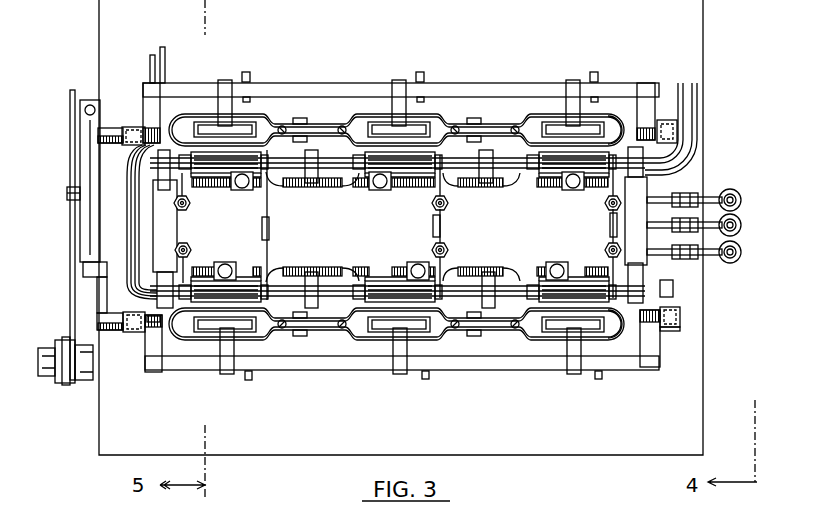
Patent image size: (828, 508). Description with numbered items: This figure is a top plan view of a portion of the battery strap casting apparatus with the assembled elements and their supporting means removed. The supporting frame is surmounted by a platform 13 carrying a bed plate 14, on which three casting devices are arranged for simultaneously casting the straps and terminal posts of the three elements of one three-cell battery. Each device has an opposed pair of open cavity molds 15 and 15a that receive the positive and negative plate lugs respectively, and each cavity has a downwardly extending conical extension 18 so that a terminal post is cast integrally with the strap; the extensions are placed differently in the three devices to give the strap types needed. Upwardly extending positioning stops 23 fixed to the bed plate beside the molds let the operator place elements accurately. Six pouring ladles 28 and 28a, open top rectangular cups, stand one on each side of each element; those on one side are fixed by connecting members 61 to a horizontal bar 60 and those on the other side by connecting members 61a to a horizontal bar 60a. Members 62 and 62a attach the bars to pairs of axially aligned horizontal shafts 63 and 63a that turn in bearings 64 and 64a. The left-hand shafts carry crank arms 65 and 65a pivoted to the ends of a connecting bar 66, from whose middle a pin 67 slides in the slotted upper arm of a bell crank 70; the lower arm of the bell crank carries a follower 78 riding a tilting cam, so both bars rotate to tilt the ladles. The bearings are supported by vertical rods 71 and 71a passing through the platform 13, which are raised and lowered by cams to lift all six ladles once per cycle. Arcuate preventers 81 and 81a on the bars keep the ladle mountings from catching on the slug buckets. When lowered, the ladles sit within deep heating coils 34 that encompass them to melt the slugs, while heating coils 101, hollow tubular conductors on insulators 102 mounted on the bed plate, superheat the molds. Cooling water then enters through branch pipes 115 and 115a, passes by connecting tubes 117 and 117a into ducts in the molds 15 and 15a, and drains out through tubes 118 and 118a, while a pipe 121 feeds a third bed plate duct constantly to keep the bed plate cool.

The platform 13 is at (703, 428).
The bed plate 14 is at (630, 210).
The open cavity mold 15 is at (553, 170).
The open cavity mold 15a is at (574, 287).
The conical extension 18 is at (232, 266).
The positioning stop 23 is at (610, 221).
The pouring ladle 28 is at (548, 128).
The pouring ladle 28a is at (562, 330).
The heating coil 34 is at (622, 330).
The horizontal bar 60 is at (333, 88).
The horizontal bar 60a is at (355, 372).
The connecting member 61 is at (574, 82).
The connecting member 61a is at (578, 375).
The attaching member 62 is at (655, 100).
The attaching member 62a is at (658, 350).
The horizontal shaft 63 is at (110, 143).
The horizontal shaft 63a is at (127, 314).
The bearing 64 is at (668, 120).
The bearing 64a is at (681, 318).
The crank arm 65 is at (88, 102).
The crank arm 65a is at (100, 294).
The connecting bar 66 is at (92, 232).
The pin 67 is at (67, 193).
The bell crank 70 is at (70, 158).
The vertical rod 71 is at (697, 130).
The vertical rod 71a is at (673, 328).
The roller or follower 78 is at (63, 386).
The arcuate preventer 81 is at (600, 75).
The arcuate preventer 81a is at (602, 379).
The heating coil 101 is at (302, 294).
The insulator 102 is at (640, 282).
The branch pipe 115 is at (729, 190).
The branch pipe 115a is at (716, 262).
The connecting tube 117 is at (434, 206).
The connecting tube 117a is at (434, 246).
The discharge tube 118 is at (523, 188).
The discharge tube 118a is at (523, 263).
The pipe 121 is at (742, 225).